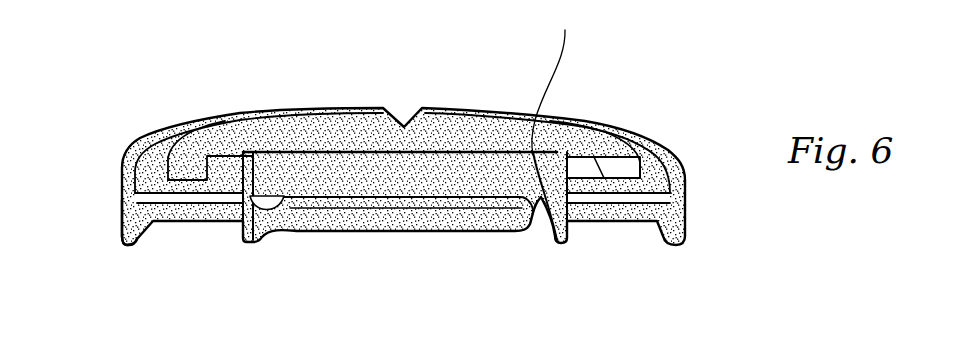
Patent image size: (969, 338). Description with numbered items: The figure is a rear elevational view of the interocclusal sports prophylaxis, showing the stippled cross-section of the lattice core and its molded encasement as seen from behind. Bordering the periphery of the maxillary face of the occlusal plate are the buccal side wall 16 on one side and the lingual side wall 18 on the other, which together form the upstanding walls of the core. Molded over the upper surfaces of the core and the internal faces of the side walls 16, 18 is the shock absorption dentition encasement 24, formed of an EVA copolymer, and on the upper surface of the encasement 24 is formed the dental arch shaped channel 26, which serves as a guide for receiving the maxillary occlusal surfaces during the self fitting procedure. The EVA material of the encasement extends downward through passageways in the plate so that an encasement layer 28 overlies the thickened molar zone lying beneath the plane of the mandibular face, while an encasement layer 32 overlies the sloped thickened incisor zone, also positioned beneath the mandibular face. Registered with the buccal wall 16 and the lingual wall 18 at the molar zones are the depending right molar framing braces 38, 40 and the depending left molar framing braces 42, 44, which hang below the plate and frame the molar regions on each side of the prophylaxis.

The buccal side wall 16 is at (667, 146).
The lingual side wall 18 is at (458, 162).
The shock absorption dentition encasement 24 is at (651, 165).
The dental arch shaped channel 26 is at (196, 151).
The encasement layer 28 is at (193, 219).
The encasement layer 32 is at (402, 232).
The right molar framing brace 38 is at (687, 215).
The right molar framing brace 40 is at (262, 228).
The left molar framing brace 42 is at (122, 217).
The left molar framing brace 44 is at (547, 233).